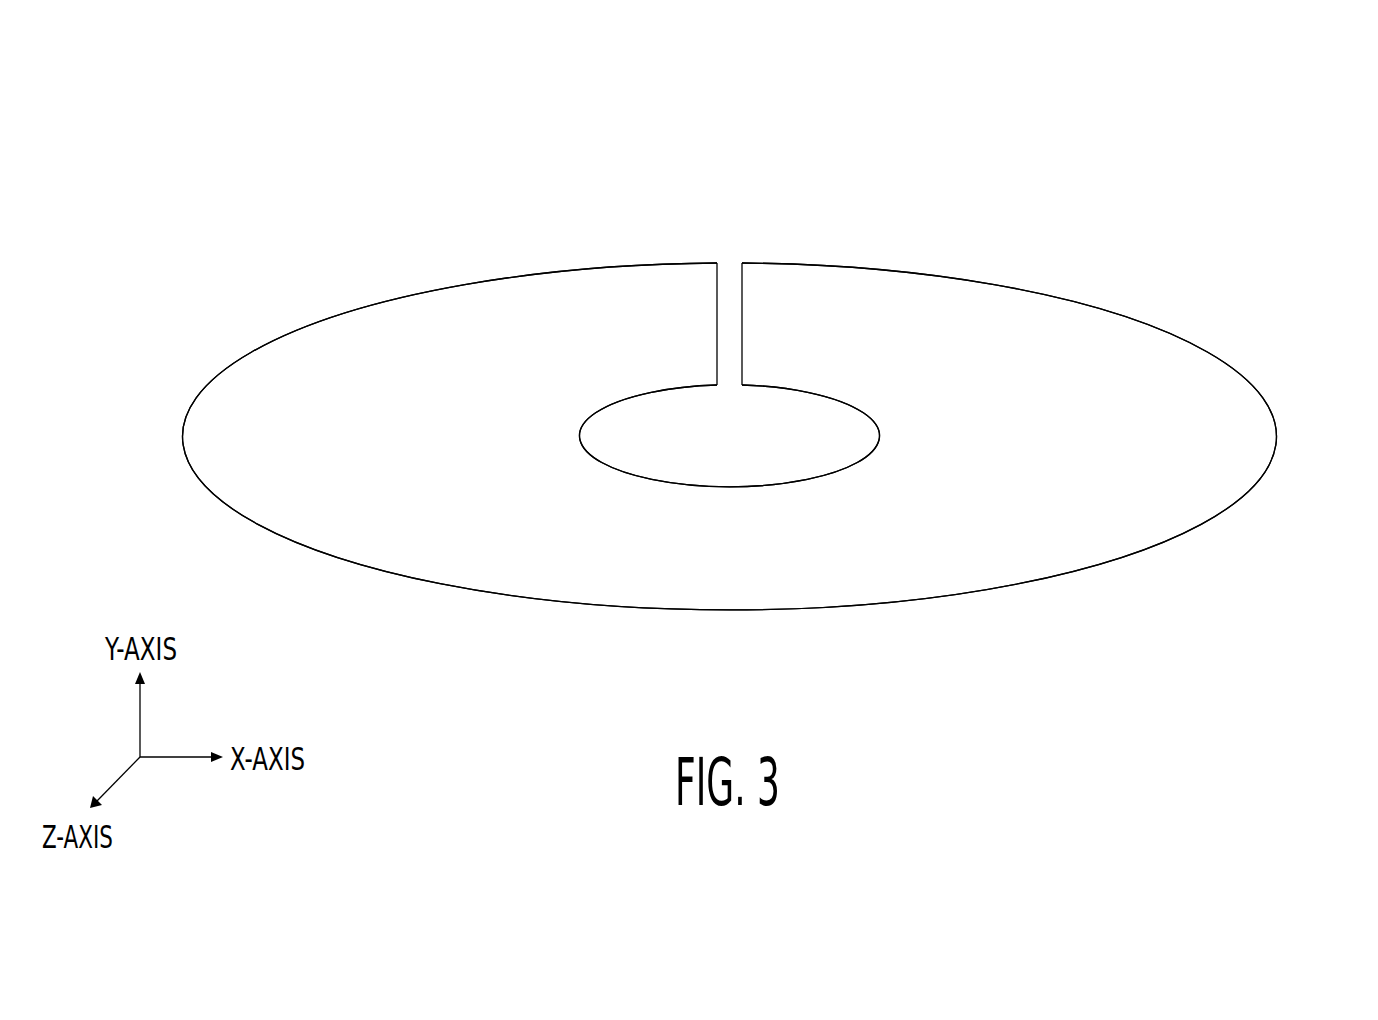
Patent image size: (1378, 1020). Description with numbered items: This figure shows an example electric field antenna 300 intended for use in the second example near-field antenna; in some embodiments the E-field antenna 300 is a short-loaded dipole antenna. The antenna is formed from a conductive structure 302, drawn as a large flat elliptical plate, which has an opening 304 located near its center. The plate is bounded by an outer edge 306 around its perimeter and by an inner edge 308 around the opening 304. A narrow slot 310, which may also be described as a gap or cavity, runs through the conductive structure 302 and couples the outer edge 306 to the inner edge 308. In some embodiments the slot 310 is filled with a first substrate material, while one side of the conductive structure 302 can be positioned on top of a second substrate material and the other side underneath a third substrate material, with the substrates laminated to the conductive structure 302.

The electric (E) field antenna 300 is at (191, 106).
The conductive structure 302 is at (1077, 335).
The opening 304 is at (747, 456).
The outer edge 306 is at (355, 310).
The inner edge 308 is at (583, 432).
The slot 310 is at (731, 252).